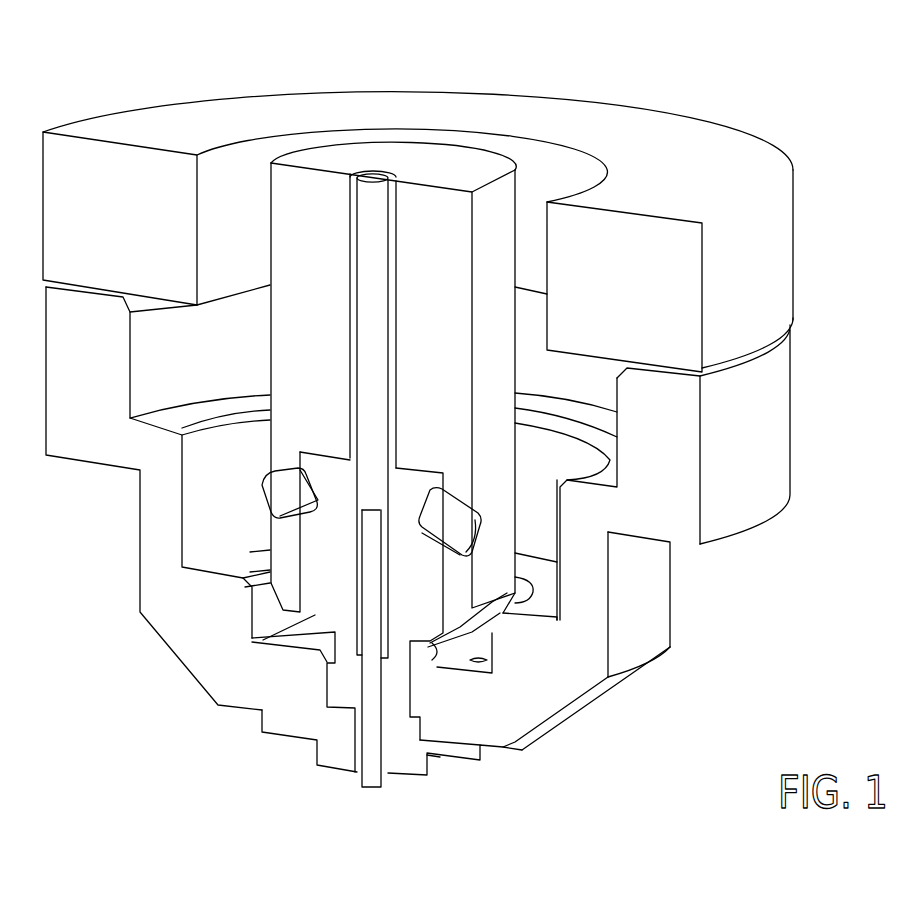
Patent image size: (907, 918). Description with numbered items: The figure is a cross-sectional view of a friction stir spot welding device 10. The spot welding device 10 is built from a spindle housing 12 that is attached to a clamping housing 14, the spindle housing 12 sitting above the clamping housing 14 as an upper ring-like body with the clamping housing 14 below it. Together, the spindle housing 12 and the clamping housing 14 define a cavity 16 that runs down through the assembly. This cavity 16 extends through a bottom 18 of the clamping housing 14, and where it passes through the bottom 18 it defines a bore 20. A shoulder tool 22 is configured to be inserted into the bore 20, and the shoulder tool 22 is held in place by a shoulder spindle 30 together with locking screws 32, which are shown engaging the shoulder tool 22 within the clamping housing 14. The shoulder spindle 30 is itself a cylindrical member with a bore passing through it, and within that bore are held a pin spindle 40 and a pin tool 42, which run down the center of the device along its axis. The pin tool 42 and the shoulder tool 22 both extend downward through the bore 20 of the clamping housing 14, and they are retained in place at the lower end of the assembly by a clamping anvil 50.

The friction stir spot welding device 10 is at (790, 45).
The spindle housing 12 is at (797, 242).
The clamping housing 14 is at (797, 410).
The cavity 16 is at (551, 177).
The bottom 18 is at (521, 753).
The bore 20 is at (332, 712).
The shoulder tool 22 is at (315, 613).
The shoulder spindle 30 is at (452, 168).
The locking screws 32 is at (280, 499).
The pin spindle 40 is at (373, 190).
The pin tool 42 is at (373, 782).
The clamping anvil 50 is at (436, 768).